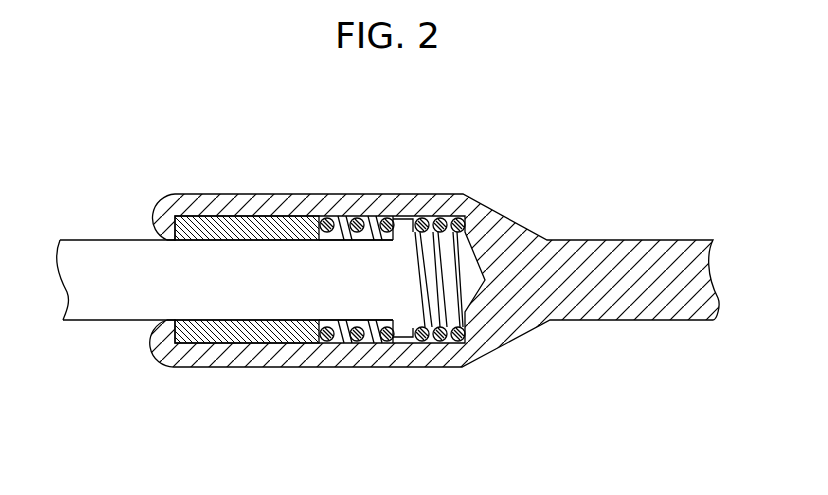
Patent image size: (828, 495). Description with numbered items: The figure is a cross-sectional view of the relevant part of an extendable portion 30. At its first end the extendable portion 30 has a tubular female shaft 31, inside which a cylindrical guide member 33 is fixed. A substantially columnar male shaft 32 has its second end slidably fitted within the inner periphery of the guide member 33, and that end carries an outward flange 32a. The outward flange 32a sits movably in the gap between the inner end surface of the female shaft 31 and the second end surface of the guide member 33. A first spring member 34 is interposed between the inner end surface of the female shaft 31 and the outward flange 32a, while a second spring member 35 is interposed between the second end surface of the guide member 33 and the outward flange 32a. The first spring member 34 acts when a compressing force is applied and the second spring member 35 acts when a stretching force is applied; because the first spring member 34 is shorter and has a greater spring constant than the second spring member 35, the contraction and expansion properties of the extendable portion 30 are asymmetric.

The extendable portion 30 is at (464, 171).
The female shaft 31 is at (503, 224).
The male shaft 32 is at (118, 313).
The outward flange 32a is at (403, 338).
The guide member 33 is at (256, 335).
The first spring member 34 is at (443, 342).
The second spring member 35 is at (358, 342).